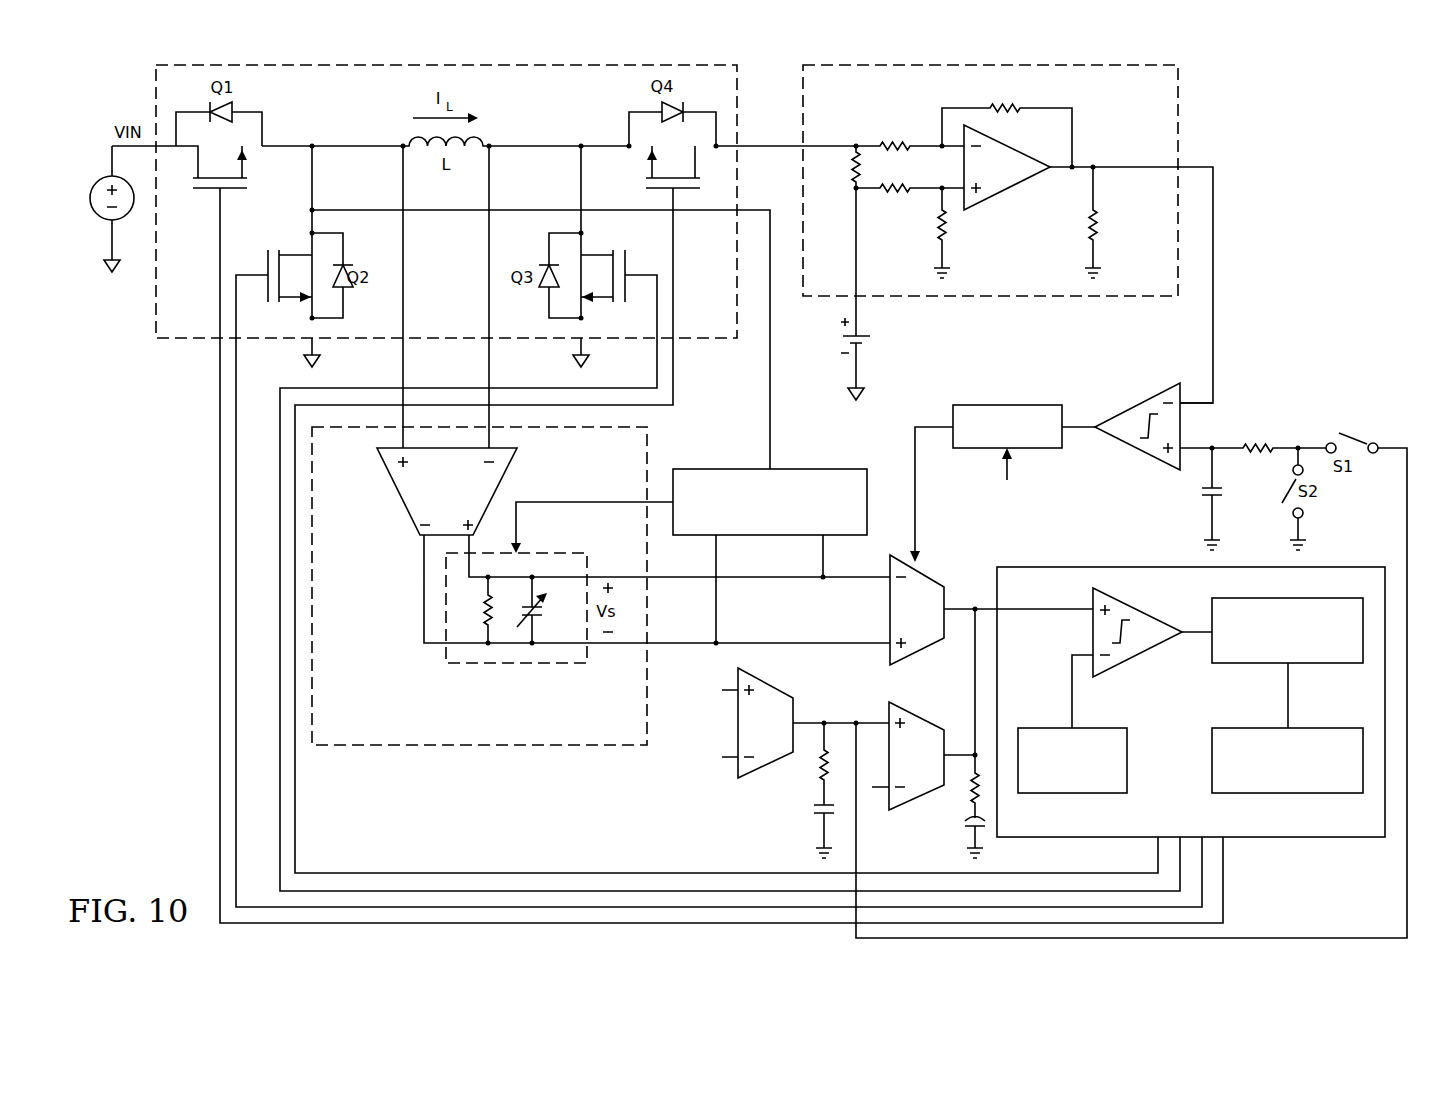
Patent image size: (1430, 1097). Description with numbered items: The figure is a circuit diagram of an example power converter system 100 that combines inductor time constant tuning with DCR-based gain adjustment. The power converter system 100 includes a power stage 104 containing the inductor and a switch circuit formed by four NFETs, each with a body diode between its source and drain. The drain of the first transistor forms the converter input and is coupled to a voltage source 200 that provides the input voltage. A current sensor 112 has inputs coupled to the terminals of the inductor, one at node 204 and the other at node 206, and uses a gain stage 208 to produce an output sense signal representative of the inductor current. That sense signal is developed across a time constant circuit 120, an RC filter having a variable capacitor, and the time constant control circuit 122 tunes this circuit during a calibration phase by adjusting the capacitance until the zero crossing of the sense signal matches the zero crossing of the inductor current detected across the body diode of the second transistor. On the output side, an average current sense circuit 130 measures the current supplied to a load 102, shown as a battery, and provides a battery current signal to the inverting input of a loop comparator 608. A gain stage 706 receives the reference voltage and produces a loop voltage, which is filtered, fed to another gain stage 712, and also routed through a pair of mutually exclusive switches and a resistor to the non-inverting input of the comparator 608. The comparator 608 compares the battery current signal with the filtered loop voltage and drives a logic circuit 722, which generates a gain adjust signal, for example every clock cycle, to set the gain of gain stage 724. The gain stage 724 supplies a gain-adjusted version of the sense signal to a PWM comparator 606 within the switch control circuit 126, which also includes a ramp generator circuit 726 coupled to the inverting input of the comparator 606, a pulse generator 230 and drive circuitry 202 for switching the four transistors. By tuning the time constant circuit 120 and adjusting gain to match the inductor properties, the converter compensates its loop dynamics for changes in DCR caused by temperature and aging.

The power converter system 100 is at (1380, 118).
The load 102 is at (878, 340).
The power stage 104 is at (147, 285).
The current sensor 112 is at (411, 755).
The time constant circuit 120 is at (500, 672).
The time constant control circuit 122 is at (750, 469).
The switch control circuit 126 is at (1263, 845).
The average current sense circuit 130 is at (1190, 136).
The voltage source 200 is at (103, 182).
The drive circuitry 202 is at (1267, 668).
The first inductor node 204 is at (403, 192).
The second inductor node 206 is at (492, 192).
The transconductance amplifier gm1 208 is at (397, 492).
The pulse generator 230 is at (1308, 727).
The PWM comparator 606 is at (1140, 653).
The loop comparator 608 is at (1137, 408).
The gain stage 706 is at (765, 765).
The gain stage 712 is at (917, 802).
The logic circuit 722 is at (1017, 403).
The gain stage 724 is at (927, 650).
The ramp generator circuit 726 is at (1053, 728).